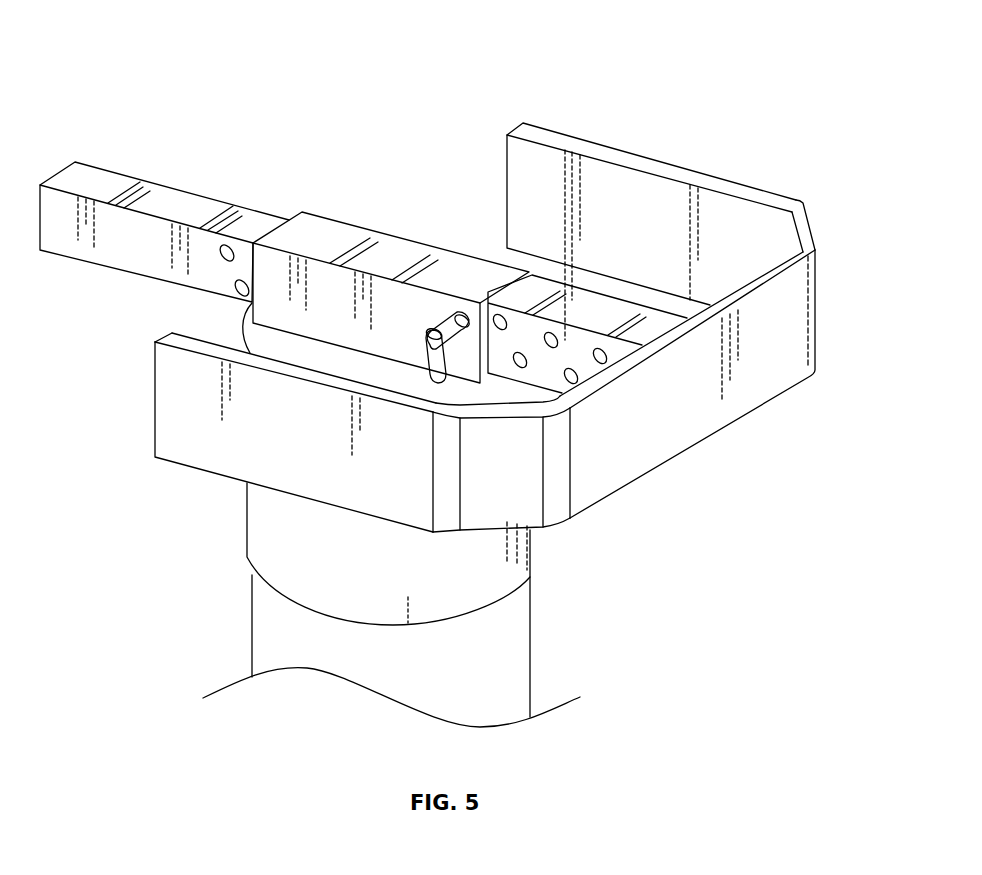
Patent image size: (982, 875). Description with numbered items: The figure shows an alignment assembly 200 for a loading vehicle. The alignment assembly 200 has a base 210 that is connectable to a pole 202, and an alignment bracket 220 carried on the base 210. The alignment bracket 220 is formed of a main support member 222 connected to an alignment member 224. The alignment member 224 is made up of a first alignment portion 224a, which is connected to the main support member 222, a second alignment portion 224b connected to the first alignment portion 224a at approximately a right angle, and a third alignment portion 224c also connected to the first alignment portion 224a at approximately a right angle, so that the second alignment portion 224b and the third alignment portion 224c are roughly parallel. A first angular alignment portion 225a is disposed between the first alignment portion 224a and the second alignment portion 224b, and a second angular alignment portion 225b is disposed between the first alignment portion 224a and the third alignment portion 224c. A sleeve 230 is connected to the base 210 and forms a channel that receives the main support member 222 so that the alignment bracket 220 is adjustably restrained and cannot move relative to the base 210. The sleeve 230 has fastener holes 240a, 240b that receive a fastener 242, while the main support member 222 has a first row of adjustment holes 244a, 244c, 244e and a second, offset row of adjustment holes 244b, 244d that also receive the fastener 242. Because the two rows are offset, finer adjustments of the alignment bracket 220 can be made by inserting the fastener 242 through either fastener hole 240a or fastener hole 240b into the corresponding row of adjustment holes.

The alignment assembly 200 is at (196, 45).
The pole 202 is at (252, 622).
The base 210 is at (247, 521).
The alignment bracket 220 is at (359, 176).
The main support member 222 is at (257, 214).
The alignment member 224 is at (494, 352).
The first alignment portion 224a is at (758, 381).
The second alignment portion 224b is at (757, 184).
The third alignment portion 224c is at (192, 458).
The first angular alignment portion 225a is at (810, 211).
The second angular alignment portion 225b is at (472, 520).
The sleeve 230 is at (396, 232).
The fastener hole 240a is at (450, 310).
The fastener hole 240b is at (437, 384).
The fastener 242 is at (427, 337).
The adjustment hole 244a is at (603, 349).
The adjustment hole 244b is at (582, 375).
The adjustment hole 244c is at (555, 333).
The adjustment hole 244d is at (520, 369).
The adjustment hole 244e is at (503, 316).